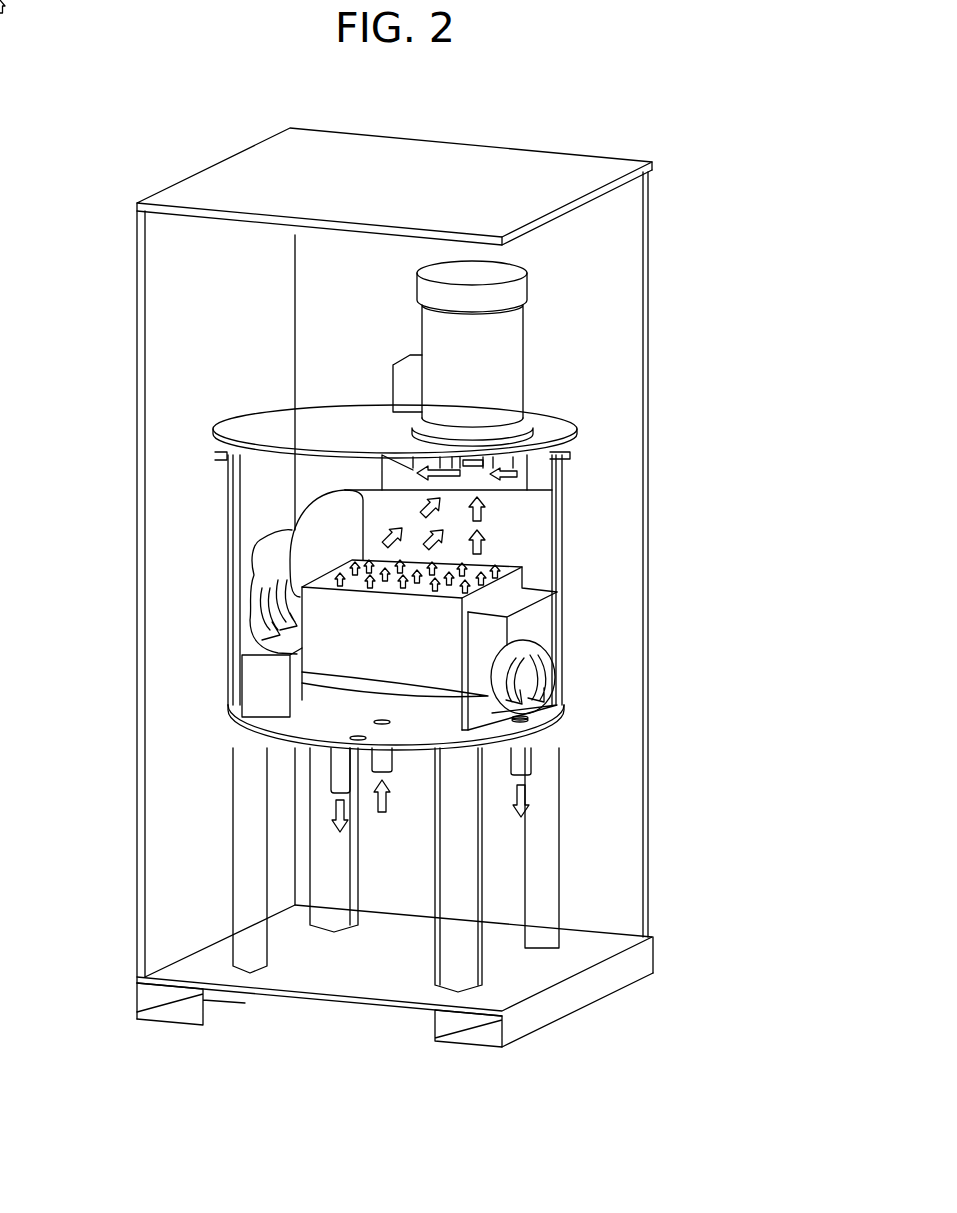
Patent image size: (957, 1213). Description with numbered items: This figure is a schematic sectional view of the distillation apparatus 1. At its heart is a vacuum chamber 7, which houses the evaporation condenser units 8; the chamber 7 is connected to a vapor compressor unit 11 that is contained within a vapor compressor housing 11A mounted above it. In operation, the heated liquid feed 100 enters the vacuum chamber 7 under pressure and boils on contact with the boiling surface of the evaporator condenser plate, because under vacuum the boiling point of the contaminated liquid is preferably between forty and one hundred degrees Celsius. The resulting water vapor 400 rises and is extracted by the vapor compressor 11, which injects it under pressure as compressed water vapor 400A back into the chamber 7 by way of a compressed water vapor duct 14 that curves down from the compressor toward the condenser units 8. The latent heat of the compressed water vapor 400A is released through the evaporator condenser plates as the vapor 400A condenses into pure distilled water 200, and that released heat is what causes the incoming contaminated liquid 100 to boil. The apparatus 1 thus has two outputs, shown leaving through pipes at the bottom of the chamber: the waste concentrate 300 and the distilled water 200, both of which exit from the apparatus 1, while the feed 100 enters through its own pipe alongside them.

The distillation apparatus 1 is at (320, 397).
The vacuum chamber 7 is at (228, 480).
The evaporation condenser units 8 is at (325, 657).
The vapor compressor unit 11 is at (508, 462).
The vapor compressor housing 11A is at (380, 470).
The compressed water vapor duct 14 is at (243, 543).
The heated liquid feed 100 is at (382, 815).
The distilled water 200 is at (540, 676).
The waste concentrate 300 is at (300, 690).
The water vapor 400 is at (487, 543).
The compressed water vapor 400A is at (268, 617).